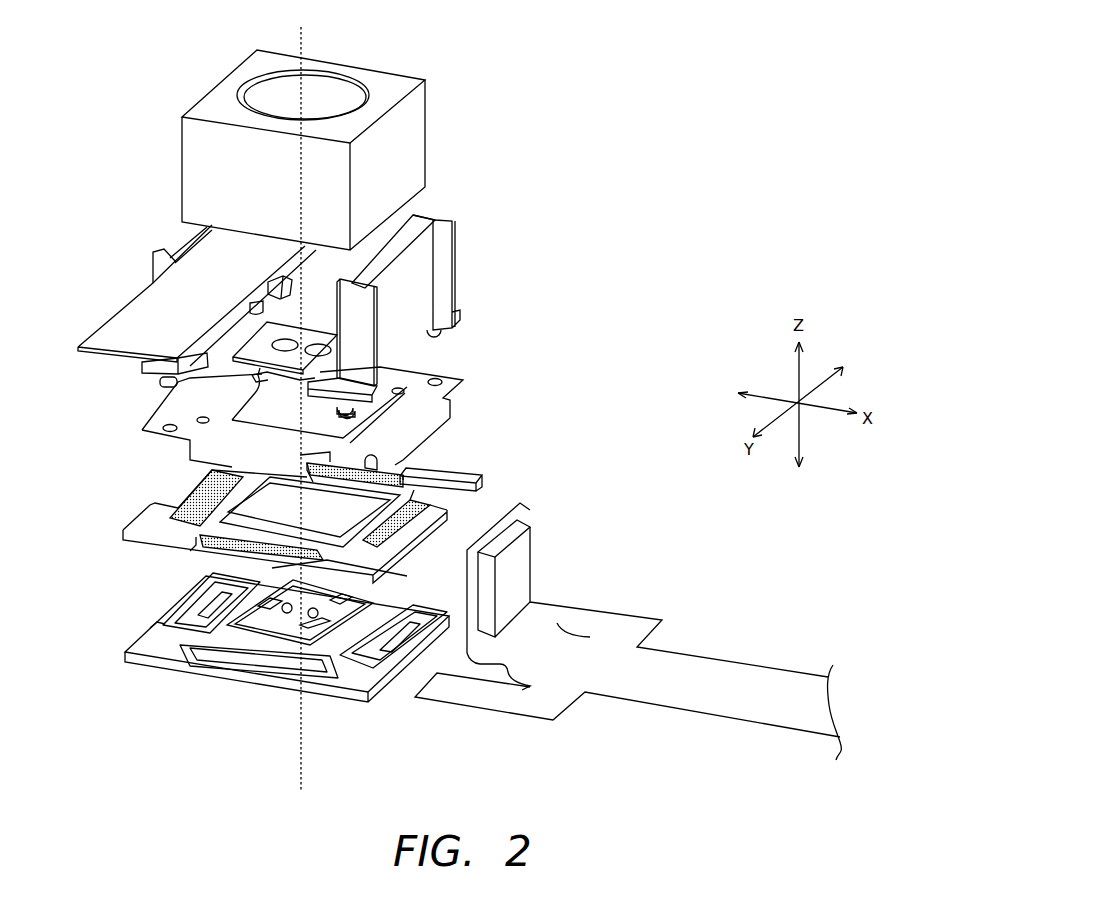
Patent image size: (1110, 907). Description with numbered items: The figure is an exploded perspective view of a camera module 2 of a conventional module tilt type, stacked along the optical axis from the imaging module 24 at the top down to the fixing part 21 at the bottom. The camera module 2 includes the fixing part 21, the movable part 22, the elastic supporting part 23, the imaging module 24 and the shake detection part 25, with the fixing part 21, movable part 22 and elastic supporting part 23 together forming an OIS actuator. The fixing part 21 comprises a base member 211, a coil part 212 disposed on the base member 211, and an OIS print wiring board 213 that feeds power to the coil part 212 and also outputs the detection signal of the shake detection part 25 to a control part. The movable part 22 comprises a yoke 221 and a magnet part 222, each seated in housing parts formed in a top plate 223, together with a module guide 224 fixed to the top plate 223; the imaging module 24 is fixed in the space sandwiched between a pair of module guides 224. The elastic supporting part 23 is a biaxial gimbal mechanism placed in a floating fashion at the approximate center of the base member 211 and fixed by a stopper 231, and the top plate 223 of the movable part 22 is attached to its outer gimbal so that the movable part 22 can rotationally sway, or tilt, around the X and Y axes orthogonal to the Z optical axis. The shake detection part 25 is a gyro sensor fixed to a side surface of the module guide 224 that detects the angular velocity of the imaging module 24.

The camera module 2 is at (545, 107).
The fixing part 21 is at (357, 703).
The base member 211 is at (125, 657).
The coil part 212 is at (250, 668).
The OIS print wiring board 213 is at (660, 618).
The movable part 22 is at (564, 236).
The yoke 221 is at (463, 380).
The magnet part 222 is at (197, 518).
The top plate 223 is at (475, 472).
The module guide 224 is at (453, 247).
The elastic supporting part 23 is at (248, 627).
The stopper 231 is at (293, 330).
The imaging module 24 is at (428, 124).
The shake detection part 25 is at (525, 550).